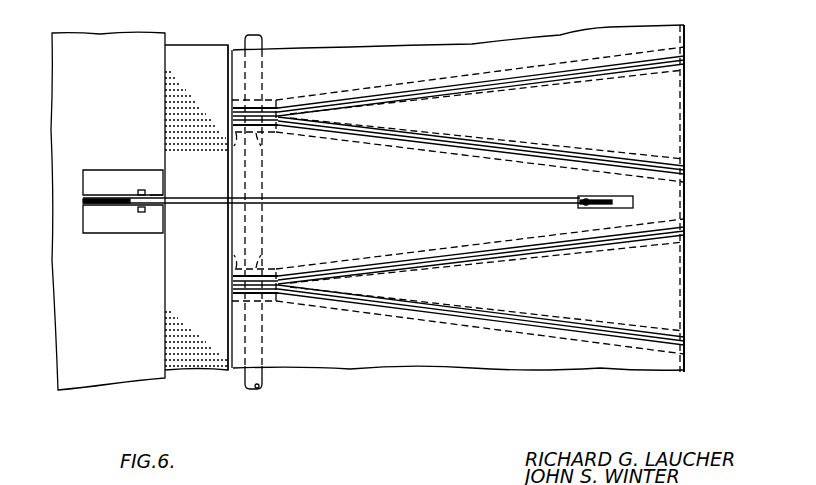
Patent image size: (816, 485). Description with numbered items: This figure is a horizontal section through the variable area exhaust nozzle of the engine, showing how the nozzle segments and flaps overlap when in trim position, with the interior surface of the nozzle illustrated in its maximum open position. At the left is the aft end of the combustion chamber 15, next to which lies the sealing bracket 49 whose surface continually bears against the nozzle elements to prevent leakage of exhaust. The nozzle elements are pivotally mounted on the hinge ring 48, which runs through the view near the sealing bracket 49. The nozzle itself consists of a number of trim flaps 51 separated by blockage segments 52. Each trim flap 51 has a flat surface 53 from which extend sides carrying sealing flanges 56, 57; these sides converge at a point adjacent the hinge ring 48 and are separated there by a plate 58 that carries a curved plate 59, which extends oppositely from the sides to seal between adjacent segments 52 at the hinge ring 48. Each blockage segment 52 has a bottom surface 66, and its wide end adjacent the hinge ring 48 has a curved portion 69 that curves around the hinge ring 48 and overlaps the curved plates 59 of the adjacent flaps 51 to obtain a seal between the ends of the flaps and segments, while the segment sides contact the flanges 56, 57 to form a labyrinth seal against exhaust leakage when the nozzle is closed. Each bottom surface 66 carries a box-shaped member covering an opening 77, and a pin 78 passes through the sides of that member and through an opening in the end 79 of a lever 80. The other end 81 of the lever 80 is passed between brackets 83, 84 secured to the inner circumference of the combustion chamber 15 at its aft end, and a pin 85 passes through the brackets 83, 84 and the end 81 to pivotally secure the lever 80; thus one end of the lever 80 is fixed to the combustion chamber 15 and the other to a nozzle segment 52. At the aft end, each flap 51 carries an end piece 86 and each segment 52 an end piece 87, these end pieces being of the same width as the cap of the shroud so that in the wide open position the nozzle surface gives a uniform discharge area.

The combustion chamber 15 is at (102, 43).
The hinge ring 48 is at (262, 41).
The sealing bracket 49 is at (195, 50).
The trim flap 51 is at (688, 117).
The blockage segment 52 is at (688, 205).
The flat surface 53 is at (665, 90).
The sealing flange 56 is at (475, 70).
The sealing flange 57 is at (431, 156).
The plate 58 is at (260, 131).
The curved plate 59 is at (268, 100).
The bottom surface 66 is at (410, 48).
The curved portion 69 is at (236, 81).
The opening 77 is at (585, 205).
The pin 78 is at (610, 200).
The lever end 79 is at (614, 201).
The lever 80 is at (407, 204).
The lever end 81 is at (153, 200).
The bracket 83 is at (97, 173).
The bracket 84 is at (118, 222).
The pin 85 is at (140, 189).
The end piece 86 is at (686, 67).
The end piece 87 is at (686, 34).